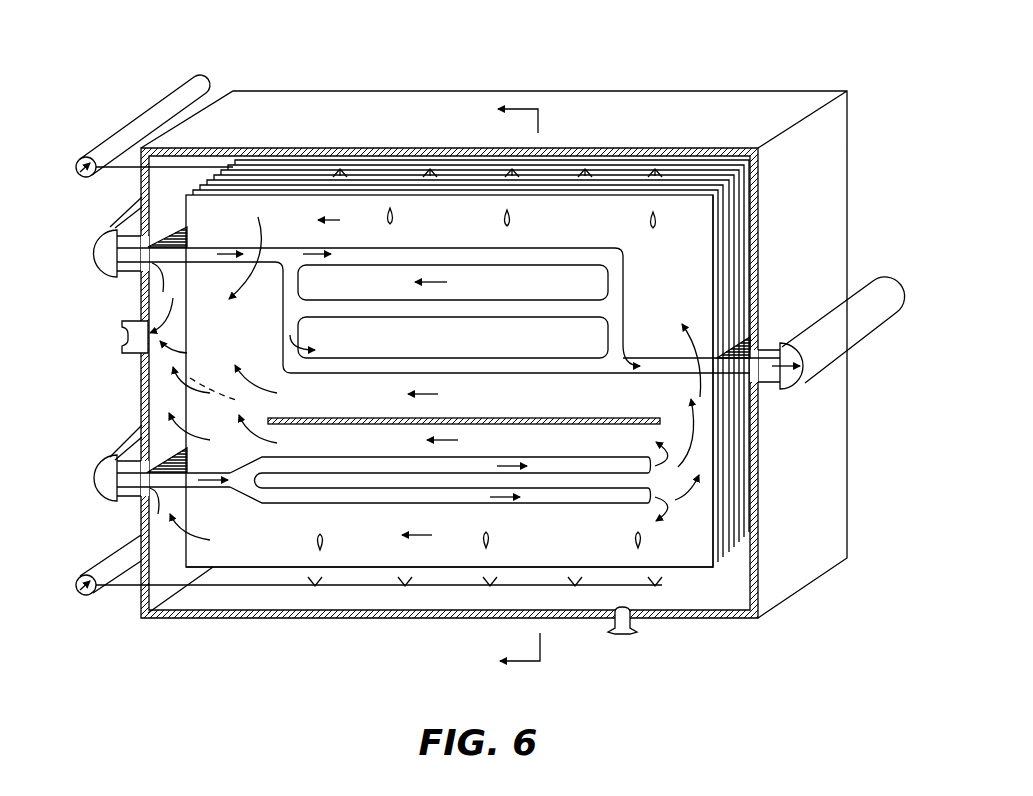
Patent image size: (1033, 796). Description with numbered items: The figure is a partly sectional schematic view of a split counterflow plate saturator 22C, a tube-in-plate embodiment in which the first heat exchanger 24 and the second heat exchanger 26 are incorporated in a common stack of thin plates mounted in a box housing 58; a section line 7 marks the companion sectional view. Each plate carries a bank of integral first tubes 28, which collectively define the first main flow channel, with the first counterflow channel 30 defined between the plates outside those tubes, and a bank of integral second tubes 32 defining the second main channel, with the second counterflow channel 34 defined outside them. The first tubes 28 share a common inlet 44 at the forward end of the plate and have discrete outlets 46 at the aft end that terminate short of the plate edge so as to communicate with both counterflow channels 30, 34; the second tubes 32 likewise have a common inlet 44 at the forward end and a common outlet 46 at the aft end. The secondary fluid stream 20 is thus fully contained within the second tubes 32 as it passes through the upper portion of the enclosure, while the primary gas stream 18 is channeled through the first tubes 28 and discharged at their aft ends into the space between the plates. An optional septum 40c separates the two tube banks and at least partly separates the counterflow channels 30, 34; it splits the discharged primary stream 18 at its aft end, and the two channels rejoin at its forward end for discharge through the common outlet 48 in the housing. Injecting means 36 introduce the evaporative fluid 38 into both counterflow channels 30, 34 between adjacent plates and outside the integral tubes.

The split counterflow plate saturator 22C is at (673, 58).
The box housing 58 is at (734, 131).
The second heat exchanger 26 is at (699, 257).
The first heat exchanger 24 is at (694, 525).
The second counterflow channel 34 is at (679, 272).
The first counterflow channel 30 is at (346, 548).
The means for injecting evaporative fluid 36 is at (143, 112).
The evaporative fluid 38 is at (50, 180).
The secondary fluid stream 20 is at (103, 262).
The primary gas stream 18 is at (104, 487).
The common inlet 44 is at (150, 296).
The second tubes 32 is at (448, 317).
The septum 40c is at (530, 418).
The first tubes 28 is at (272, 504).
The outlets 46 is at (766, 385).
The common outlet 48 is at (134, 355).
The section line 7- 7 is at (508, 385).